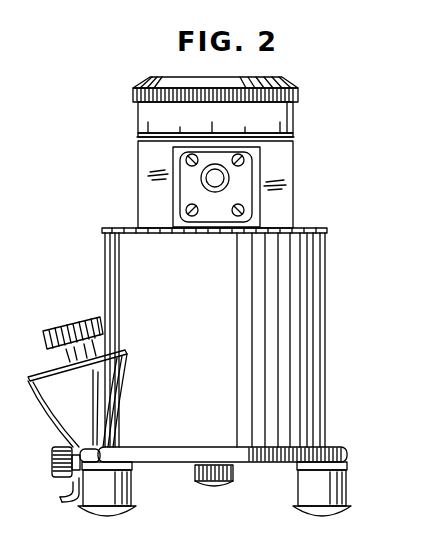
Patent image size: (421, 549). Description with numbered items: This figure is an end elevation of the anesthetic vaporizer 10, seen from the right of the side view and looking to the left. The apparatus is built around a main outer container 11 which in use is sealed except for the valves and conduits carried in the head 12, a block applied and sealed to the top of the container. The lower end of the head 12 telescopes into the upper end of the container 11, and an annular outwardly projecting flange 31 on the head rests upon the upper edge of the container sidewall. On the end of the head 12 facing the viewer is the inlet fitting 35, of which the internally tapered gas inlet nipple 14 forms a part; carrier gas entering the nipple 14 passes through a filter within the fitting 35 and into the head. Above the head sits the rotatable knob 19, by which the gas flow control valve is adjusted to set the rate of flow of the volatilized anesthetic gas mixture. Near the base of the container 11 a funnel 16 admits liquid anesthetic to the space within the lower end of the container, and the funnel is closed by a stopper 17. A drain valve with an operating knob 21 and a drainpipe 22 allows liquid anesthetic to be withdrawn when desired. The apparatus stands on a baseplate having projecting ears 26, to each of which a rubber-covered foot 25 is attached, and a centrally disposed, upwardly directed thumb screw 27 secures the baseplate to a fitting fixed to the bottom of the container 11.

The anesthetic vaporizer 10 is at (305, 122).
The main outer container 11 is at (324, 292).
The head 12 is at (150, 178).
The gas inlet nipple 14 is at (229, 178).
The funnel 16 is at (72, 408).
The stopper 17 is at (70, 319).
The rotatable knob 19 is at (288, 84).
The operating knob 21 is at (52, 462).
The drainpipe 22 is at (62, 490).
The rubber-covered foot 25 is at (120, 496).
The projecting ear 26 is at (97, 452).
The thumb screw 27 is at (206, 486).
The annular outwardly projecting flange 31 is at (310, 229).
The inlet fitting 35 is at (205, 212).